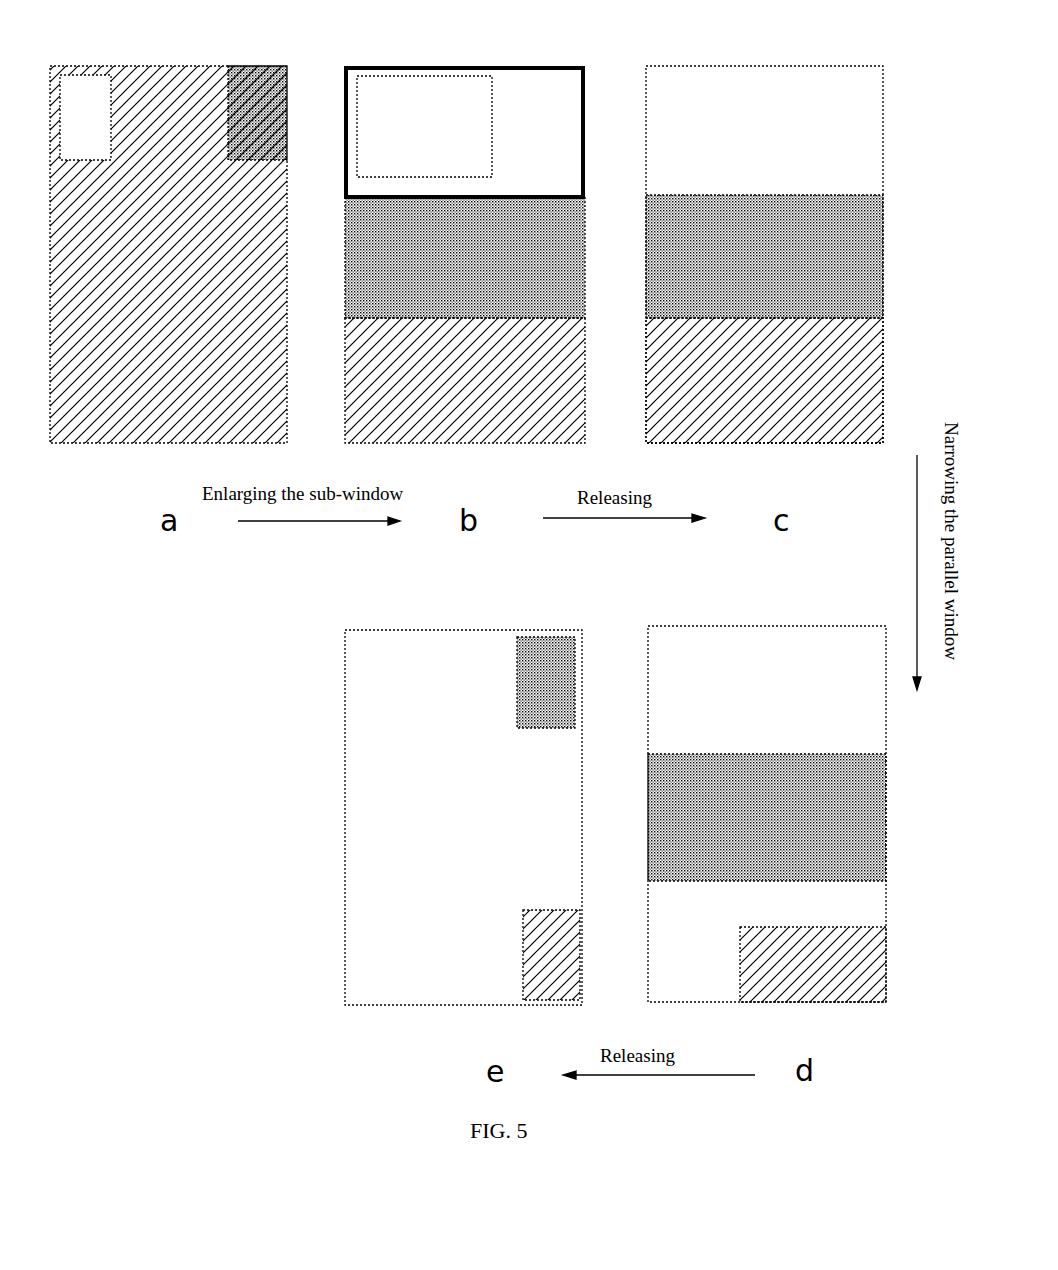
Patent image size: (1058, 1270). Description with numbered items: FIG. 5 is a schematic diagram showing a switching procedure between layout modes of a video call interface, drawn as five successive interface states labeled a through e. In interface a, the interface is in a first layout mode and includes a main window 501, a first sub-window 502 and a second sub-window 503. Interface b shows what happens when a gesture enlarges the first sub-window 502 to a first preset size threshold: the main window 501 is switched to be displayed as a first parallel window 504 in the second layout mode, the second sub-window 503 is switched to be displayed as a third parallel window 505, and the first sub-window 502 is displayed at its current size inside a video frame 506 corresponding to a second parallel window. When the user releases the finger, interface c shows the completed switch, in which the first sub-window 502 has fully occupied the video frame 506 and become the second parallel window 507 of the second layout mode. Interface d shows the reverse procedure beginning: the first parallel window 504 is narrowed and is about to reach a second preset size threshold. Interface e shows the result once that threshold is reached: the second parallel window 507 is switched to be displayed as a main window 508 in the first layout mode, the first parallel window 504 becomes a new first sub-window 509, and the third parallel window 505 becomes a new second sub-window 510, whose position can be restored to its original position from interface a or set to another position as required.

The main window 501 is at (220, 68).
The first sub-window 502 is at (70, 68).
The second sub-window 503 is at (272, 68).
The first parallel window 504 is at (480, 438).
The third parallel window 505 is at (586, 262).
The video frame 506 is at (586, 133).
The second parallel window 507 is at (744, 82).
The main window 508 is at (443, 645).
The new first sub-window 509 is at (578, 925).
The new second sub-window 510 is at (545, 637).